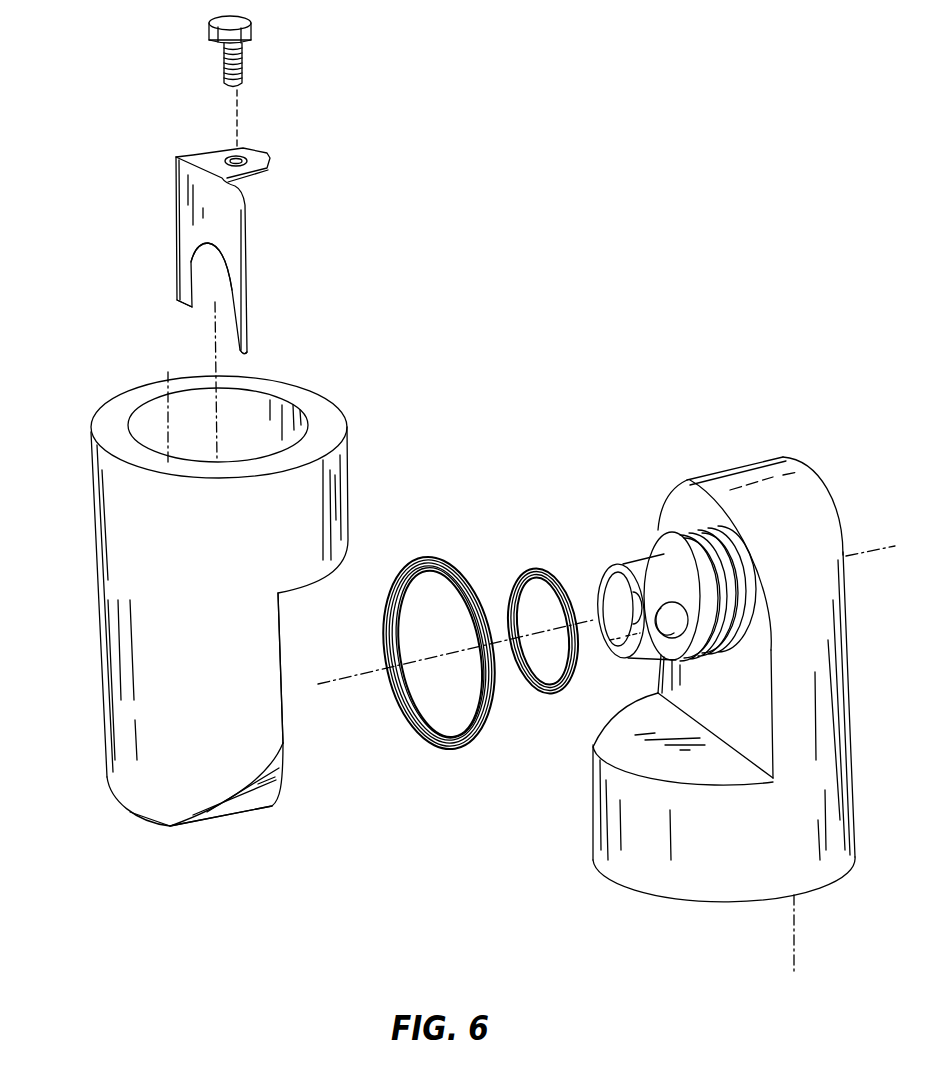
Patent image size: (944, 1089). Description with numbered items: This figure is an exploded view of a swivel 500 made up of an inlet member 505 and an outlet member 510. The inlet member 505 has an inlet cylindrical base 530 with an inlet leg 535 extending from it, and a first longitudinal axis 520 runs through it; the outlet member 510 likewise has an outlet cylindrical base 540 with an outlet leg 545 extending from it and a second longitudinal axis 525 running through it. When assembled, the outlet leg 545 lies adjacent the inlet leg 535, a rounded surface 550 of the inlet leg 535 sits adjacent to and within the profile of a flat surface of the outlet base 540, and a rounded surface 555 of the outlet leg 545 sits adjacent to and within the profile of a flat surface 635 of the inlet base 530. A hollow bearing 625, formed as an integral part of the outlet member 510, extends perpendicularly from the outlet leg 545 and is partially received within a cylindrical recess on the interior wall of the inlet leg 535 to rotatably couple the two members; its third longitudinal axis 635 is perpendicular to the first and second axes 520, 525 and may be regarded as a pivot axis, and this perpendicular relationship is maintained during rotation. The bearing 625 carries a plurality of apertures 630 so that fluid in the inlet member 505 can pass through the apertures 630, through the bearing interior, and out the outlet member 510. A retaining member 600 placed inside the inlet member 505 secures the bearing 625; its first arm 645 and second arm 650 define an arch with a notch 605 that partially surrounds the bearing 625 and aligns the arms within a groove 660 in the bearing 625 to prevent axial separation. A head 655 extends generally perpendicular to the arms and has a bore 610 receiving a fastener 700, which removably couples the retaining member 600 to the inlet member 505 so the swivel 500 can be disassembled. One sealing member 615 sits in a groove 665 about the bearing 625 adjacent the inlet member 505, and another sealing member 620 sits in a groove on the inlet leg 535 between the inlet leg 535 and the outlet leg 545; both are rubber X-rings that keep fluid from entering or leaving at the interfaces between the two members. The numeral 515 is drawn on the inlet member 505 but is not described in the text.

The swivel 500 is at (576, 287).
The inlet member 505 is at (215, 615).
The outlet member 510 is at (718, 687).
The bore 515 is at (251, 433).
The first longitudinal axis 520 is at (168, 430).
The second longitudinal axis 525 is at (793, 925).
The inlet cylindrical base 530 is at (333, 513).
The inlet leg 535 is at (162, 696).
The outlet cylindrical base 540 is at (832, 832).
The outlet leg 545 is at (827, 655).
The rounded surface 550 is at (153, 826).
The rounded surface 555 is at (775, 457).
The retaining member 600 is at (230, 283).
The notch 605 is at (205, 312).
The bore 610 is at (243, 155).
The sealing member 615 is at (550, 696).
The sealing member 620 is at (413, 718).
The hollow bearing 625 is at (670, 533).
The apertures 630 is at (640, 558).
The third longitudinal axis 635 is at (318, 580).
The first arm 645 is at (176, 298).
The second arm 650 is at (242, 358).
The head 655 is at (270, 158).
The groove 660 is at (705, 567).
The groove 665 is at (732, 525).
The fastener 700 is at (246, 18).